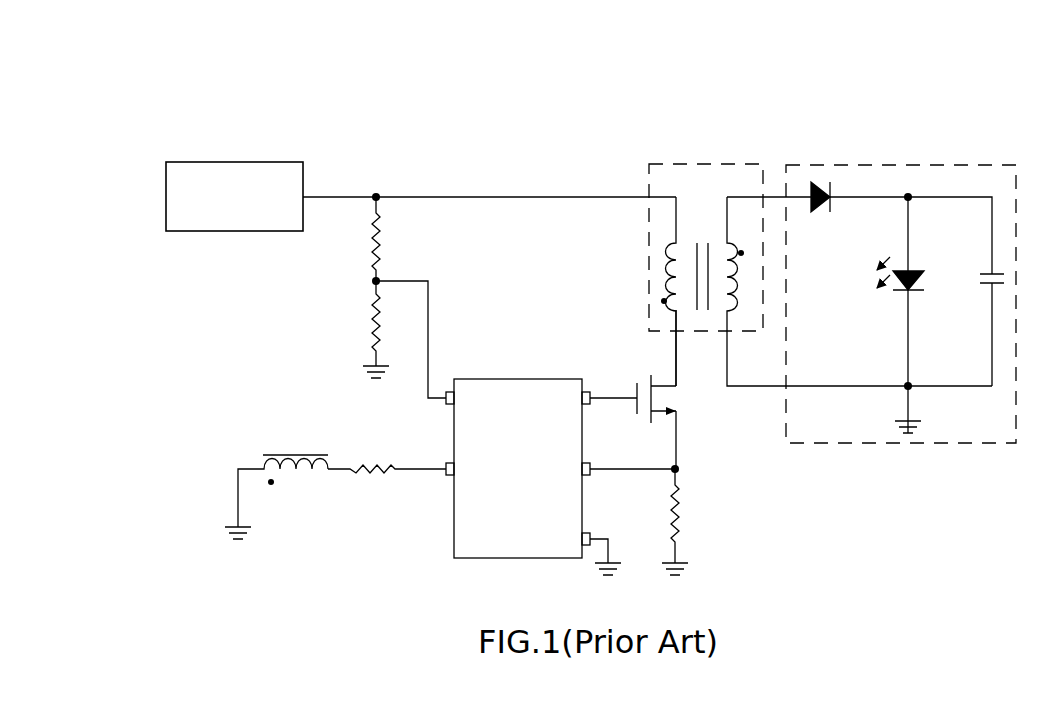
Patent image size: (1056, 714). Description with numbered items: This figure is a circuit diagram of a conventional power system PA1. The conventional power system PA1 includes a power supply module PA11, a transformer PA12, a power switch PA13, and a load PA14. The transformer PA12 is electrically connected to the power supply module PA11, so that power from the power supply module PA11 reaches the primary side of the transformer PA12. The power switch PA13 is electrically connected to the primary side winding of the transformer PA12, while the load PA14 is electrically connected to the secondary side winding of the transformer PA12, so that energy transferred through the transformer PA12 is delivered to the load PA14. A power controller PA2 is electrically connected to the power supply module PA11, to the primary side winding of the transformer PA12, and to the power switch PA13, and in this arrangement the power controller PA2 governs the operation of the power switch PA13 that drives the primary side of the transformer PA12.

The conventional power system PA1 is at (975, 100).
The power supply module PA11 is at (292, 162).
The transformer PA12 is at (702, 164).
The power switch PA13 is at (689, 401).
The load PA14 is at (878, 165).
The power controller PA2 is at (535, 379).